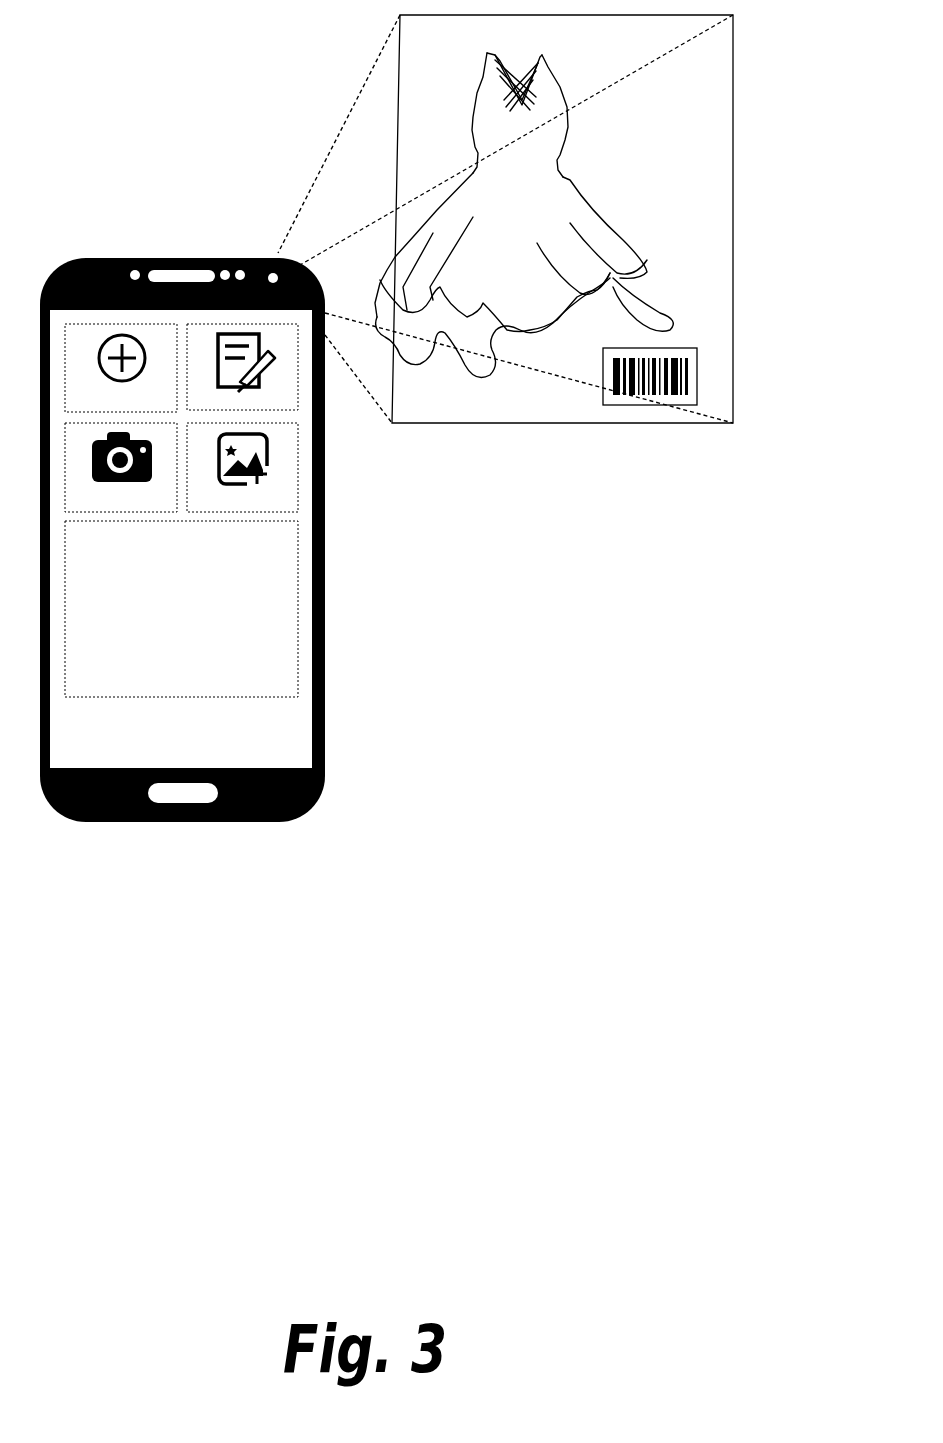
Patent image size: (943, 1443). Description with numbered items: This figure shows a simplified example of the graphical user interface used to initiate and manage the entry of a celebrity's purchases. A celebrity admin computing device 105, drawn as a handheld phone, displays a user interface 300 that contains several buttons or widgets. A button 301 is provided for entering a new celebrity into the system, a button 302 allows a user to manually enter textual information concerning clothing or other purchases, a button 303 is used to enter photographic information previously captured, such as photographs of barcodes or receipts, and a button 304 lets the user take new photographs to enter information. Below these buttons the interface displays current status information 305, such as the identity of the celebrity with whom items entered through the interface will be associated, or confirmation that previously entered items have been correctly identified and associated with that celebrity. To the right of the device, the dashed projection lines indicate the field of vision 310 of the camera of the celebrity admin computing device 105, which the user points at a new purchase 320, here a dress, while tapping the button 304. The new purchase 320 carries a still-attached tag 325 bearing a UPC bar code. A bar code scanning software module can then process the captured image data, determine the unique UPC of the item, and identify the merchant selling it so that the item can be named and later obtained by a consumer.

The celebrity admin computing device 105 is at (315, 798).
The user interface 300 is at (172, 756).
The button 301 is at (108, 406).
The button 302 is at (228, 406).
The button 303 is at (228, 506).
The button 304 is at (106, 506).
The current status information 305 is at (172, 686).
The field of vision 310 is at (437, 424).
The new purchase 320 is at (583, 200).
The tag 325 is at (627, 405).